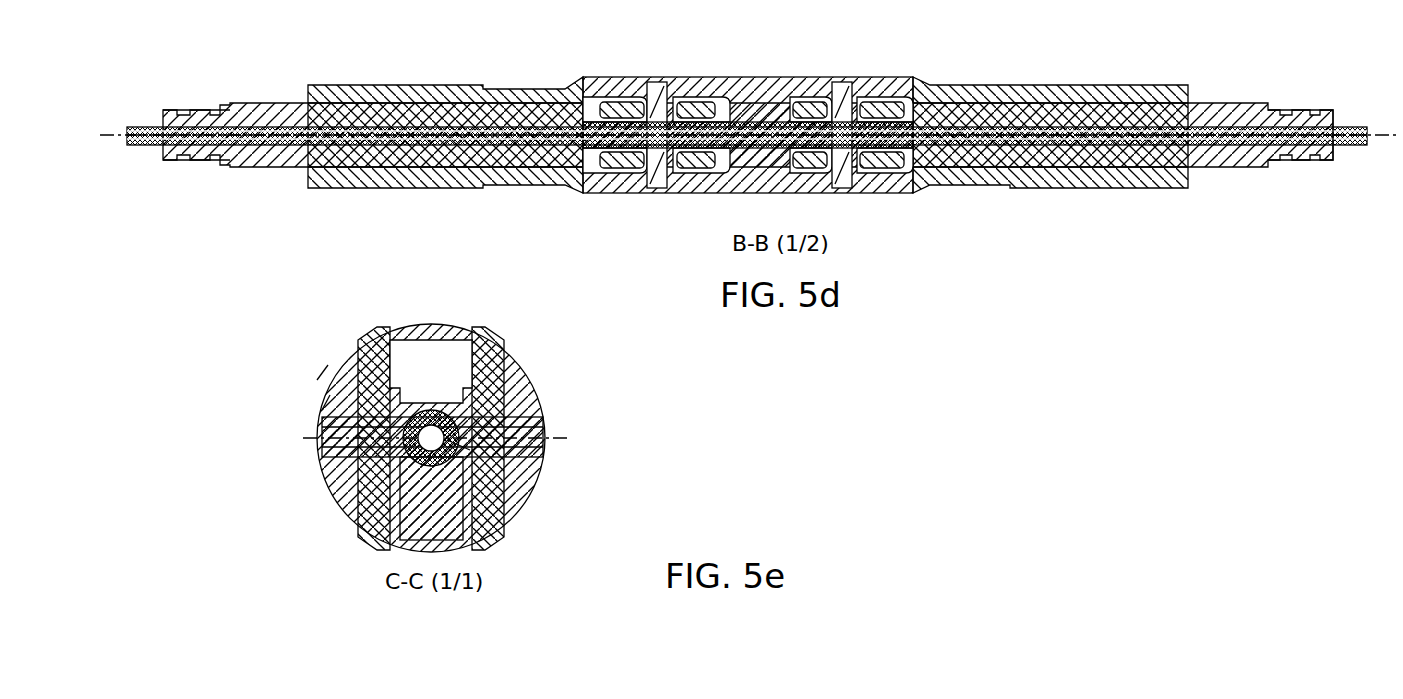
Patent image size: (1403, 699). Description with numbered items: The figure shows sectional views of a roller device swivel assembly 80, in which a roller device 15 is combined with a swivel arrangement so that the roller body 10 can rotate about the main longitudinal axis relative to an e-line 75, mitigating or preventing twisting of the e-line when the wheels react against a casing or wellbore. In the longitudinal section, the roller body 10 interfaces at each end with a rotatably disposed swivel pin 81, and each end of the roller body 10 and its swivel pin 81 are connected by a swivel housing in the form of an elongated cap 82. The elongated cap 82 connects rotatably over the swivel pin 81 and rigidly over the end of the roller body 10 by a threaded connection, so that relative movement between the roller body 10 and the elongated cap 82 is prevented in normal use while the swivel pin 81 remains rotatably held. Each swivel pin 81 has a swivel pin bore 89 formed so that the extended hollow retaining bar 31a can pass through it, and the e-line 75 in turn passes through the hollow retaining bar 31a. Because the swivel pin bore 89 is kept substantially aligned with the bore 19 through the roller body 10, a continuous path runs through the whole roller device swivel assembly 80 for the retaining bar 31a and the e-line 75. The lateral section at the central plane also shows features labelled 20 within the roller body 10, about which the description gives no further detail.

In FIG. 5D, the roller device swivel assembly 80 is at (198, 78).
In FIG. 5E, the roller device swivel assembly 80 is at (318, 378).
In FIG. 5D, the elongated cap 82 is at (382, 85).
In FIG. 5D, the roller device 15 is at (736, 131).
In FIG. 5E, the roller device 15 is at (282, 375).
In FIG. 5D, the bore 19 is at (775, 85).
In FIG. 5D, the swivel pin bore 89 is at (1228, 122).
In FIG. 5E, the swivel pin bore 89 is at (415, 432).
In FIG. 5D, the hollow retaining bar 31a is at (1347, 125).
In FIG. 5E, the hollow retaining bar 31a is at (415, 448).
In FIG. 5D, the swivel pin 81 is at (272, 167).
In FIG. 5D, the slot / contact lamella 20 is at (600, 193).
In FIG. 5E, the slot / contact lamella 20 is at (383, 327).
In FIG. 5D, the roller body 10 is at (622, 193).
In FIG. 5E, the roller body 10 is at (540, 397).
In FIG. 5D, the e-line 75 is at (1360, 147).
In FIG. 5E, the e-line 75 is at (460, 438).